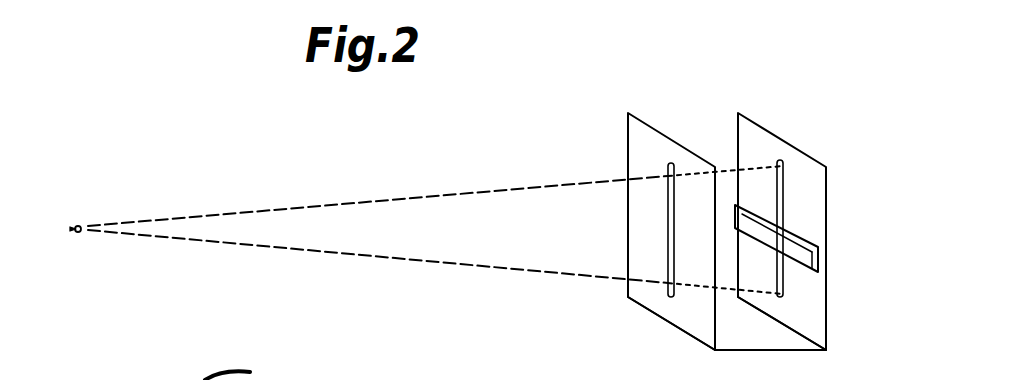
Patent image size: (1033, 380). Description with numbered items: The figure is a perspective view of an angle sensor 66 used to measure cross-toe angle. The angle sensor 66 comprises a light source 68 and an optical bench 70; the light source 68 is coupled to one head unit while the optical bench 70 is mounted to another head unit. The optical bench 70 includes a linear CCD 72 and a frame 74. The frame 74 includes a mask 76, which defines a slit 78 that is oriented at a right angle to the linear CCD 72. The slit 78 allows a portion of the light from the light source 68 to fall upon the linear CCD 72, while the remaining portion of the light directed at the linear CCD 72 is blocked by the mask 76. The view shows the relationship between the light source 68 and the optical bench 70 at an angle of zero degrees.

The angle sensor 66 is at (308, 128).
The light source 68 is at (76, 235).
The optical bench 70 is at (805, 147).
The linear CCD 72 is at (750, 192).
The frame 74 is at (827, 326).
The mask 76 is at (628, 138).
The slit 78 is at (660, 303).